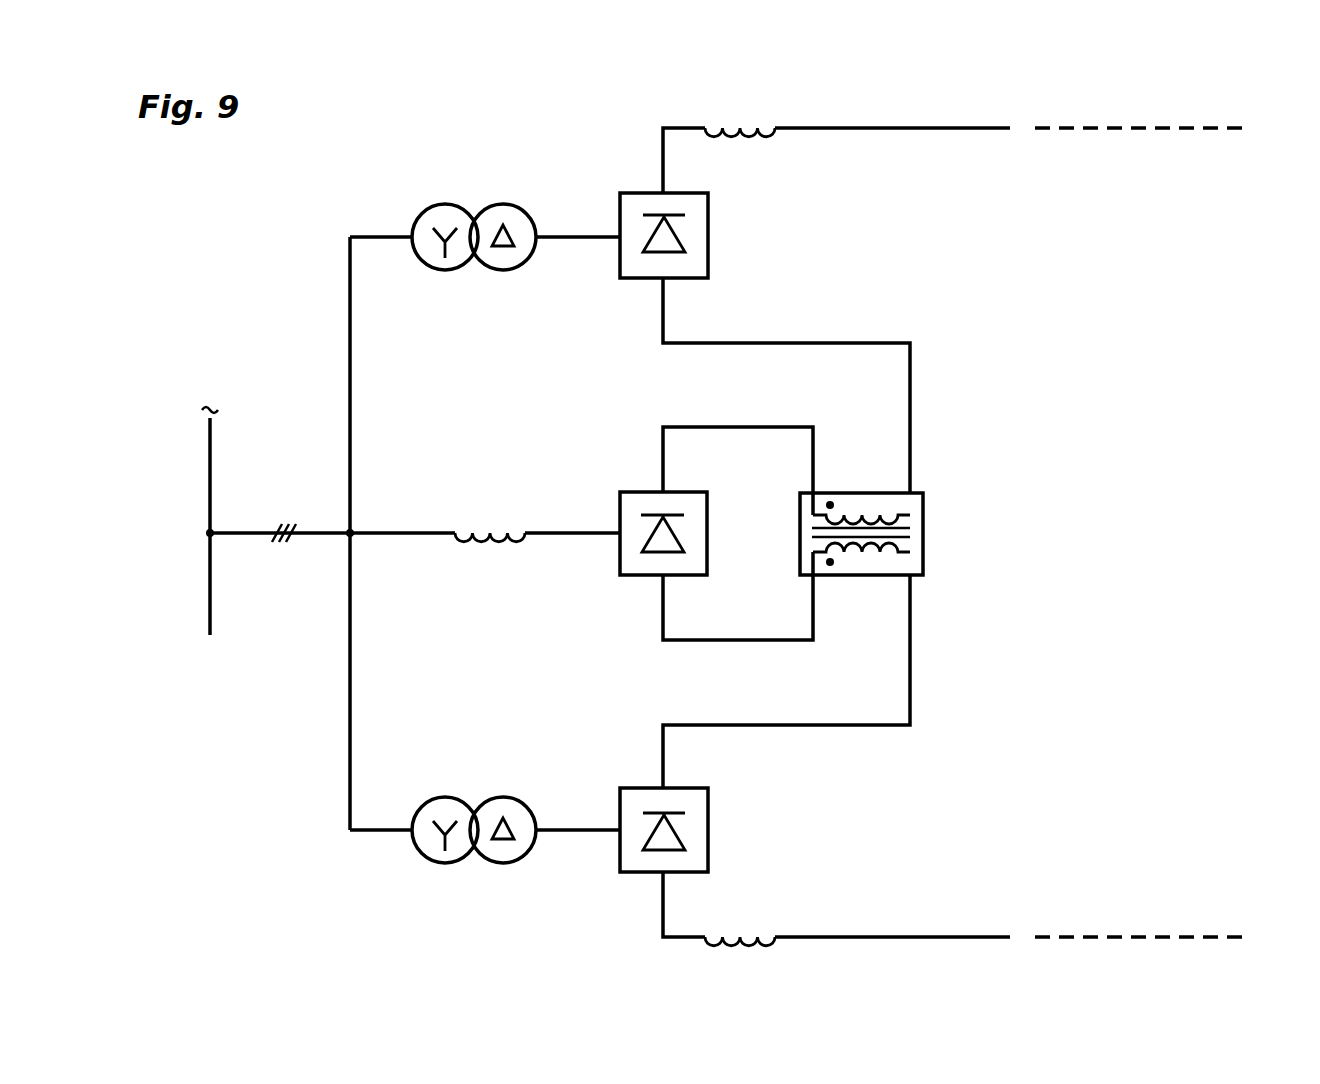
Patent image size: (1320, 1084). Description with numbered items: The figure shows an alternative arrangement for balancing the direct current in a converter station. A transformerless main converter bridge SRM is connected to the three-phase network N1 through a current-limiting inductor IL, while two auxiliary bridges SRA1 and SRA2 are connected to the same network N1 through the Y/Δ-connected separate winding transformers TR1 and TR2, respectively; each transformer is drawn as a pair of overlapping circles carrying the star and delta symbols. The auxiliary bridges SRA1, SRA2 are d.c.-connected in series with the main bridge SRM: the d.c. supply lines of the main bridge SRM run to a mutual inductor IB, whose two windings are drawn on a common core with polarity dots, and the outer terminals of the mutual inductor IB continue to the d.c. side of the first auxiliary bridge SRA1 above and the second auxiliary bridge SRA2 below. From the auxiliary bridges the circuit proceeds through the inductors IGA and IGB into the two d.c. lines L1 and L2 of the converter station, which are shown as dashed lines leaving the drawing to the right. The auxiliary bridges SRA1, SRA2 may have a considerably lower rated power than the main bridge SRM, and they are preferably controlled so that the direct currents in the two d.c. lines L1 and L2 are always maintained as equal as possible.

The three-phase network N1 is at (210, 600).
The Y/Δ-connected separate winding transformer TR1 is at (477, 205).
The Y/Δ-connected separate winding transformer TR2 is at (477, 797).
The auxiliary bridge SRA1 is at (690, 278).
The auxiliary bridge SRA2 is at (708, 828).
The transformerless converter bridge (main bridge) SRM is at (690, 575).
The mutual inductor IB is at (925, 525).
The current-limiting inductor IL is at (490, 533).
The inductor IGA is at (738, 128).
The inductor IGB is at (738, 937).
The d.c. line L1 is at (1095, 128).
The d.c. line L2 is at (1095, 936).